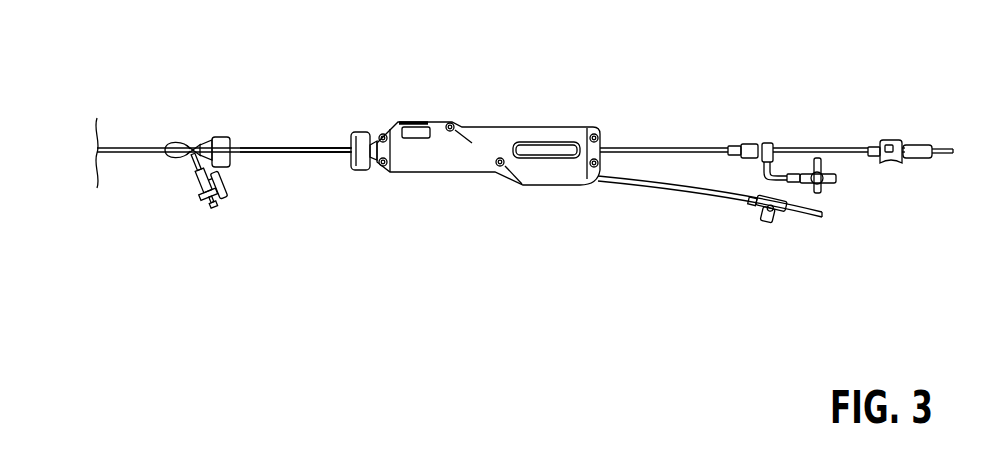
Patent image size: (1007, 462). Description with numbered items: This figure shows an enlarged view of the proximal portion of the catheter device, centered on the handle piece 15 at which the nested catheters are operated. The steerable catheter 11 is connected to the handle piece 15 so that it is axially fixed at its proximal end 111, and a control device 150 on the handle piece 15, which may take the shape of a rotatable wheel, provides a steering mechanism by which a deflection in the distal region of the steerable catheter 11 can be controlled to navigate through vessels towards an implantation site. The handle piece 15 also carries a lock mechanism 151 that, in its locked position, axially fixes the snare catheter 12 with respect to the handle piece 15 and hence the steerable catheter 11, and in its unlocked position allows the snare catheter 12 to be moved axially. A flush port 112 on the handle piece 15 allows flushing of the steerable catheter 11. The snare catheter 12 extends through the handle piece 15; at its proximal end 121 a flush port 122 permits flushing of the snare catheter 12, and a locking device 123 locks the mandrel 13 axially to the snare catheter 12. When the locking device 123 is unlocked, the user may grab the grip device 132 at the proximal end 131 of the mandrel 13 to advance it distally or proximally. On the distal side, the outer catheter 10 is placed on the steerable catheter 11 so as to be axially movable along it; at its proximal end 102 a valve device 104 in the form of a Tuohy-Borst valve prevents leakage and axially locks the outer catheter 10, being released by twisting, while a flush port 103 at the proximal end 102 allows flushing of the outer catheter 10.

The outer catheter 10 is at (124, 153).
The proximal end of the outer catheter 102 is at (151, 157).
The flush port 103 is at (215, 210).
The valve device 104 is at (223, 137).
The steerable catheter 11 is at (283, 157).
The proximal end of the steerable catheter 111 is at (341, 155).
The handle piece 15 is at (497, 113).
The control device 150 is at (361, 132).
The lock mechanism 151 is at (413, 120).
The snare catheter 12 is at (643, 148).
The flush port 112 is at (800, 218).
The proximal end of the snare catheter 121 is at (733, 145).
The flush port 122 is at (826, 181).
The locking device 123 is at (768, 143).
The mandrel 13 is at (822, 147).
The proximal end of the mandrel 131 is at (866, 146).
The grip device 132 is at (917, 145).